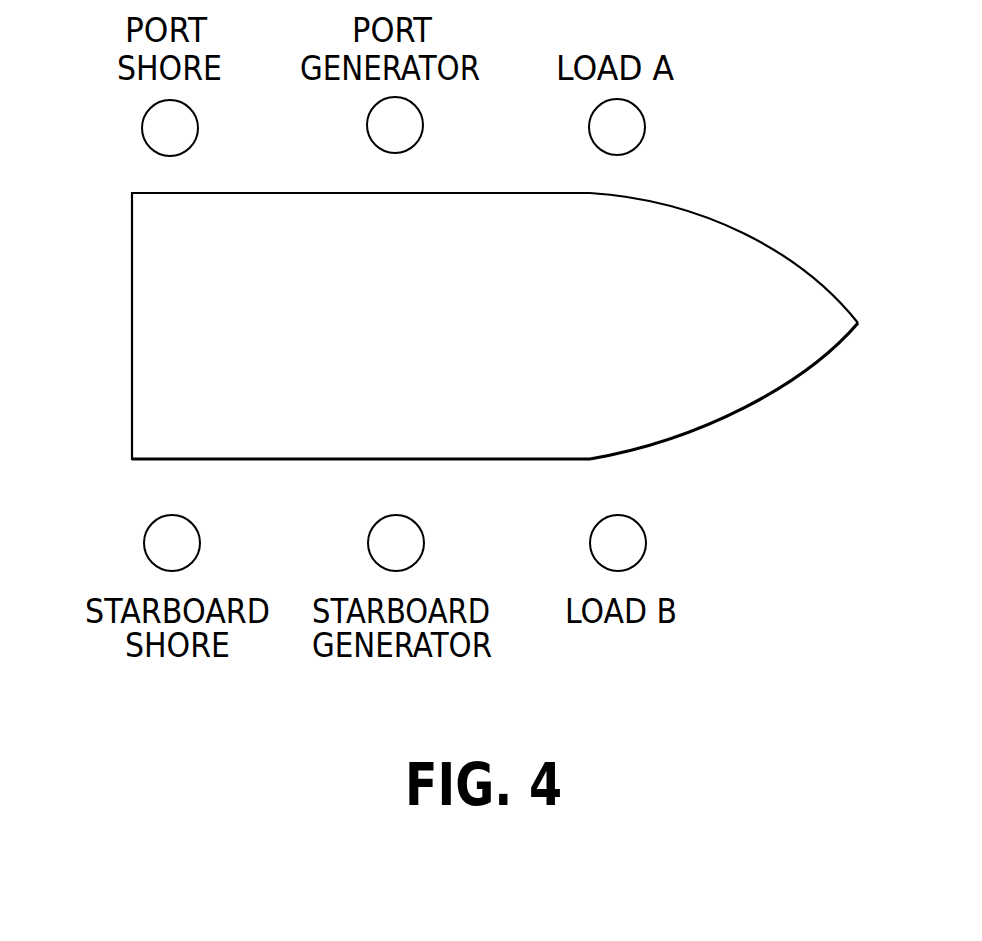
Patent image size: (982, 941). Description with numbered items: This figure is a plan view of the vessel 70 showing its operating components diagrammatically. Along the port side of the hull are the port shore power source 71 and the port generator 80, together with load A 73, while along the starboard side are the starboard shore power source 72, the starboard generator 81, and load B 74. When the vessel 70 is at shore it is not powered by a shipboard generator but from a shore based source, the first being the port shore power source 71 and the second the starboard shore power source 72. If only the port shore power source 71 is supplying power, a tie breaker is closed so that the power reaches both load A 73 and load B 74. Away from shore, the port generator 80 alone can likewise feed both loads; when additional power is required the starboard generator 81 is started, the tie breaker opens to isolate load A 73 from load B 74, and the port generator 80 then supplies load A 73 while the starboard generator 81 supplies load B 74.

The vessel 70 is at (798, 252).
The port shore power source 71 is at (147, 143).
The starboard shore power source 72 is at (150, 523).
The load A 73 is at (592, 147).
The load B 74 is at (592, 527).
The port generator 80 is at (373, 147).
The starboard generator 81 is at (370, 528).